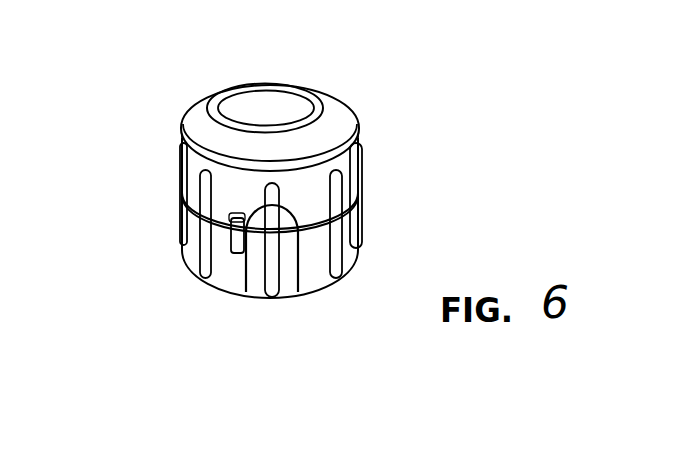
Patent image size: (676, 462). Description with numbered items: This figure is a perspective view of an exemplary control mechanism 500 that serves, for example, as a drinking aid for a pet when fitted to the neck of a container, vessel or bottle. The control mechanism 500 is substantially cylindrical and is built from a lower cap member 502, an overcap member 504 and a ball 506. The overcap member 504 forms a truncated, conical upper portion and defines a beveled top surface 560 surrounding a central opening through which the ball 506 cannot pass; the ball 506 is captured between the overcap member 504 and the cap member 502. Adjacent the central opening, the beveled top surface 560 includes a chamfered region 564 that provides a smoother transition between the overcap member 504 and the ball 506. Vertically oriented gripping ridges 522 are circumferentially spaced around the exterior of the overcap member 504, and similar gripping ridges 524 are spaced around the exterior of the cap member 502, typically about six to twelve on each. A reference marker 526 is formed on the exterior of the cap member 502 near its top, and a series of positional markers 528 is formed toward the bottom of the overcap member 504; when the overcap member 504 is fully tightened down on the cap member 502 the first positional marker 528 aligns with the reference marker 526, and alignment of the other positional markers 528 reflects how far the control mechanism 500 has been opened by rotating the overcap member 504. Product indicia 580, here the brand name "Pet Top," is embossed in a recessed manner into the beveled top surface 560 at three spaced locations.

The control mechanism 500 is at (405, 130).
The lower cap member 502 is at (363, 230).
The overcap member 504 is at (193, 170).
The ball 506 is at (267, 103).
The gripping ridges 522 is at (342, 173).
The gripping ridges 524 is at (205, 280).
The reference marker 526 is at (233, 238).
The positional markers 528 is at (303, 293).
The beveled top surface 560 is at (327, 114).
The chamfered region 564 is at (213, 101).
The product indicia 580 is at (188, 124).